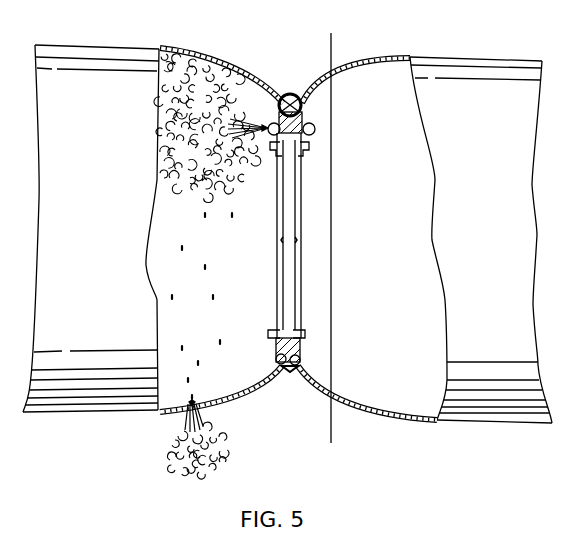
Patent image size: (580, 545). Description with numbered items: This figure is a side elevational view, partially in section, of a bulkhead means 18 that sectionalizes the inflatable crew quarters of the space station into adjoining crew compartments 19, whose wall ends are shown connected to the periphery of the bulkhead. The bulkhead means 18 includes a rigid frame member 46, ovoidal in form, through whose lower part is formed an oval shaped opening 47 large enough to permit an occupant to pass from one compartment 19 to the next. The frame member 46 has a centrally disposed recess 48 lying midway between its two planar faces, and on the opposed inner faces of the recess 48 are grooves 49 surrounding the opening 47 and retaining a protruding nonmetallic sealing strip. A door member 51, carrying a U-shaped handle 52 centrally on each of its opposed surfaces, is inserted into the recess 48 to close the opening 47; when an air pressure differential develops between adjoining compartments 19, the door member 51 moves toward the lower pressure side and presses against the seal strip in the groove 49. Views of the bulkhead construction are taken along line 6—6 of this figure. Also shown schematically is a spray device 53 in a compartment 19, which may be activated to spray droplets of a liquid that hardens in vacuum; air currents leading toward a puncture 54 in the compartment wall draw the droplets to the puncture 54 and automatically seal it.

The crew compartment 19 is at (125, 47).
The bulkhead means 18 is at (288, 97).
The spray device 53 is at (268, 128).
The recess 48 is at (309, 136).
The grooves 49 is at (304, 148).
The opening 47 is at (279, 173).
The door member 51 is at (284, 285).
The U-shaped handle 52 is at (281, 240).
The rigid frame member 46 is at (279, 362).
The puncture 54 is at (200, 418).
The section line 6- 6 is at (331, 33).